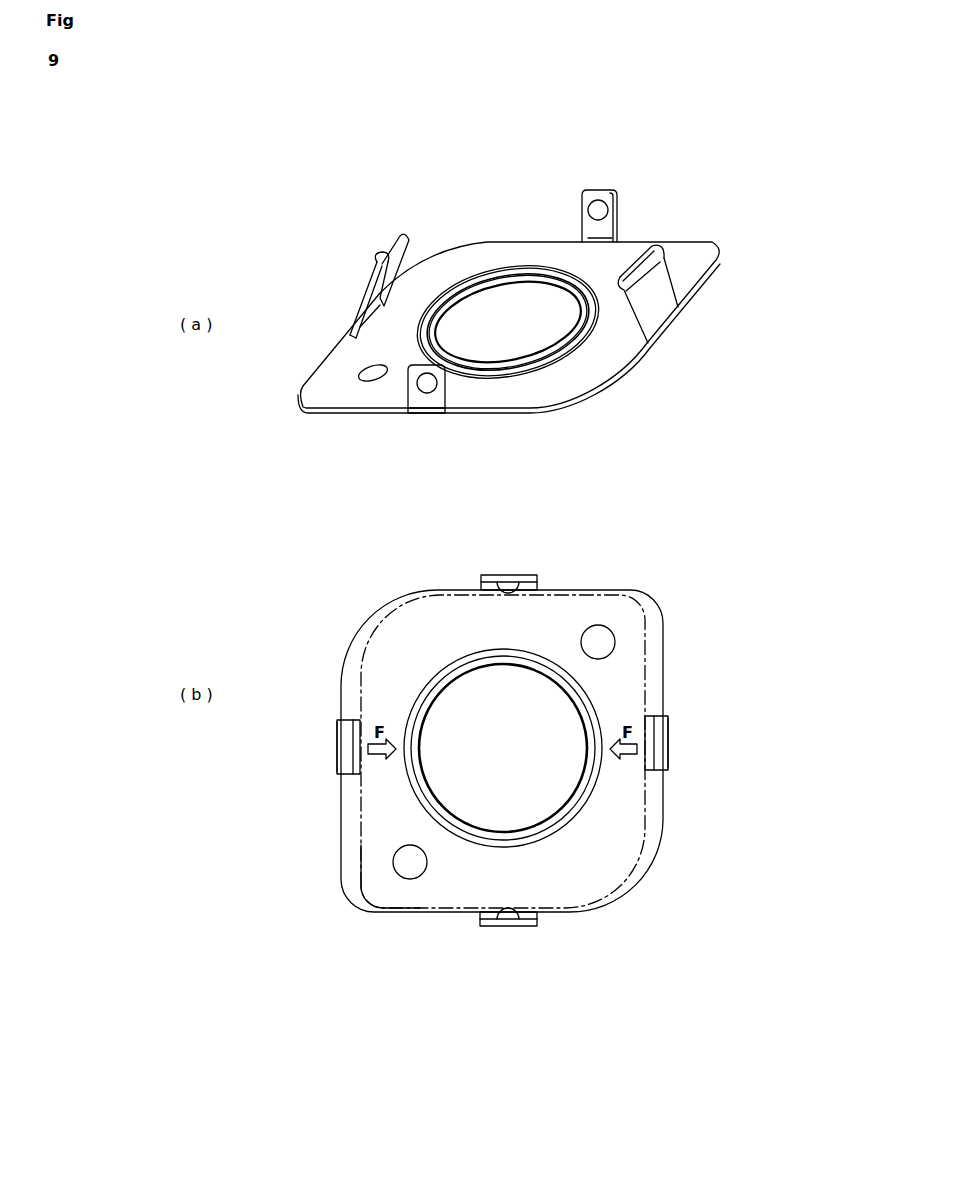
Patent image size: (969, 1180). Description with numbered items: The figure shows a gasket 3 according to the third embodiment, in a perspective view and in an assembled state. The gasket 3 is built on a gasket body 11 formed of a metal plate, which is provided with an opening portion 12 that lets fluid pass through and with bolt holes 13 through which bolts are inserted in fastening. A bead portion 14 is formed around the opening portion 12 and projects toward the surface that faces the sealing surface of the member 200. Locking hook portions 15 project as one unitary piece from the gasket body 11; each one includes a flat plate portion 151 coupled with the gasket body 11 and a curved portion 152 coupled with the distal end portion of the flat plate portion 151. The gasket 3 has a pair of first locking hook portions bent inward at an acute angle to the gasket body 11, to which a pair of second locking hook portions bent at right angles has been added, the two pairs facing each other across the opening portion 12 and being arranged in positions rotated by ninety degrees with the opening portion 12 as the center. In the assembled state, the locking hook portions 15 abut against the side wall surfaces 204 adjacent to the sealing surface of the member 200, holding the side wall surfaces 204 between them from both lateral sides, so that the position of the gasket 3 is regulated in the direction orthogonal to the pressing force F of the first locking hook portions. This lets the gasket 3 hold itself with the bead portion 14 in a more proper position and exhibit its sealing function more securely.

The gasket 3 is at (505, 566).
The gasket body 11 is at (680, 244).
The opening portion 12 is at (524, 284).
The bolt holes 13 is at (365, 367).
The bead portion 14 is at (500, 270).
The locking hook portions 15 is at (505, 572).
The flat plate portion 151 is at (360, 296).
The curved portion 152 is at (372, 268).
The member 200 is at (640, 825).
The side wall surfaces 204 is at (362, 862).